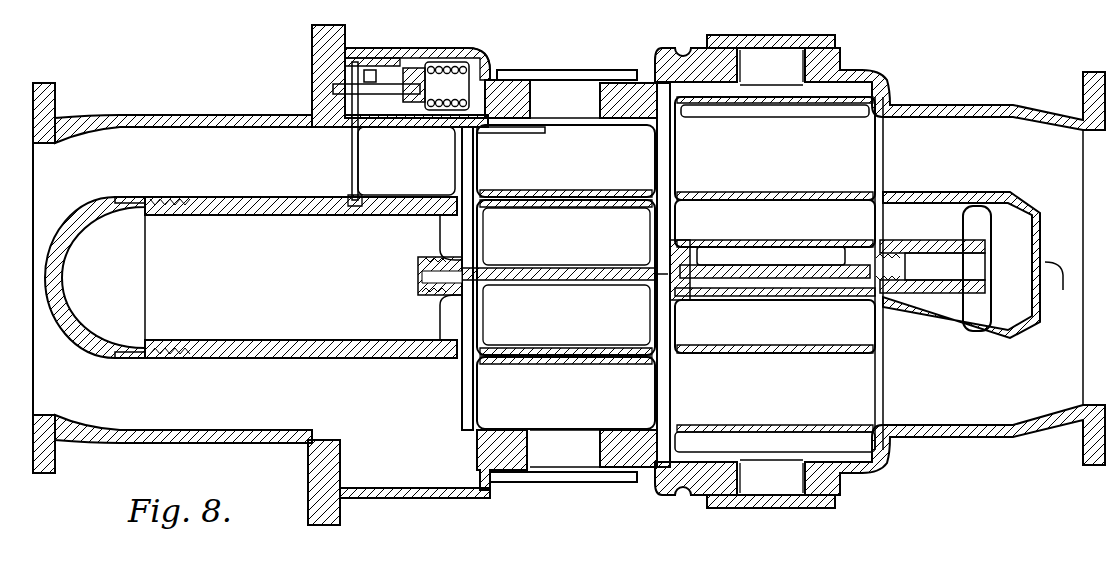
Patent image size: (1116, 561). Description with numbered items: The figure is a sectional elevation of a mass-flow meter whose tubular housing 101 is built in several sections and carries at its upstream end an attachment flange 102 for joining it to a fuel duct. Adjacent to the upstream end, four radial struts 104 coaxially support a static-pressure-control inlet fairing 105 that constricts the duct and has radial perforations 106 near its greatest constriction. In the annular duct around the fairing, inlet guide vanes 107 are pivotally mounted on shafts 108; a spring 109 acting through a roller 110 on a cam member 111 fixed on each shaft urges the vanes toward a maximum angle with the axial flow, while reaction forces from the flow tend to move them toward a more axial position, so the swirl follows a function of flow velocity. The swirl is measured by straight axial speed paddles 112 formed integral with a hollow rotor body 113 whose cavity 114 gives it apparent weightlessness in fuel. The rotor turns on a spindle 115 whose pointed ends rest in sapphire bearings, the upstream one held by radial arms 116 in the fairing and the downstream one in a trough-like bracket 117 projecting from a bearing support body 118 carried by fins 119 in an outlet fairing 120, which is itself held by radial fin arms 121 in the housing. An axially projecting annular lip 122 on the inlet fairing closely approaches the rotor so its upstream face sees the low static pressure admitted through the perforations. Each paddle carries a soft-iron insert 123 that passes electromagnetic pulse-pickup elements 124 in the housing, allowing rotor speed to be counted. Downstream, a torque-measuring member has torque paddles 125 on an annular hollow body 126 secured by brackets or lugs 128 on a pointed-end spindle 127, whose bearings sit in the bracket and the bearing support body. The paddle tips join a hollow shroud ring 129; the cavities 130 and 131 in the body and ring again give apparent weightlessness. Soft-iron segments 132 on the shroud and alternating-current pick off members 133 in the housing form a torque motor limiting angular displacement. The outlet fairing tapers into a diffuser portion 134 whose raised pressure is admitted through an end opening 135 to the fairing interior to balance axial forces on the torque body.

The tubular housing 101 is at (169, 110).
The attachment flange 102 is at (80, 77).
The radial struts 104 is at (213, 153).
The static-pressure-control inlet fairing 105 is at (64, 232).
The radial perforations 106 is at (128, 195).
The inlet guide vanes 107 is at (406, 161).
The shaft 108 is at (353, 172).
The spring 109 is at (450, 66).
The roller 110 is at (410, 70).
The cam member 111 is at (381, 86).
The speed paddles 112 is at (566, 277).
The hollow rotor body 113 is at (554, 194).
The cavity 114 is at (566, 277).
The spindle 115 is at (507, 267).
The radial arms 116 is at (452, 230).
The trough-like bracket 117 is at (731, 298).
The bearing support body 118 is at (946, 242).
The fins 119 is at (968, 224).
The outlet fairing 120 is at (1024, 206).
The radial fin arms 121 is at (954, 159).
The annular lip 122 is at (466, 358).
The insert 123 is at (552, 134).
The electromagnetic pulse-pickup elements 124 is at (552, 88).
The torque paddles 125 is at (775, 274).
The annular hollow body 126 is at (738, 196).
The pointed-end spindle 127 is at (784, 280).
The brackets or lugs 128 is at (730, 234).
The hollow shroud ring 129 is at (726, 120).
The cavity 130 is at (775, 223).
The cavity 131 is at (776, 106).
The soft-iron segments 132 is at (782, 88).
The alternating-current pick off members 133 is at (770, 50).
The diffuser portion 134 is at (1054, 365).
The end opening 135 is at (1067, 287).